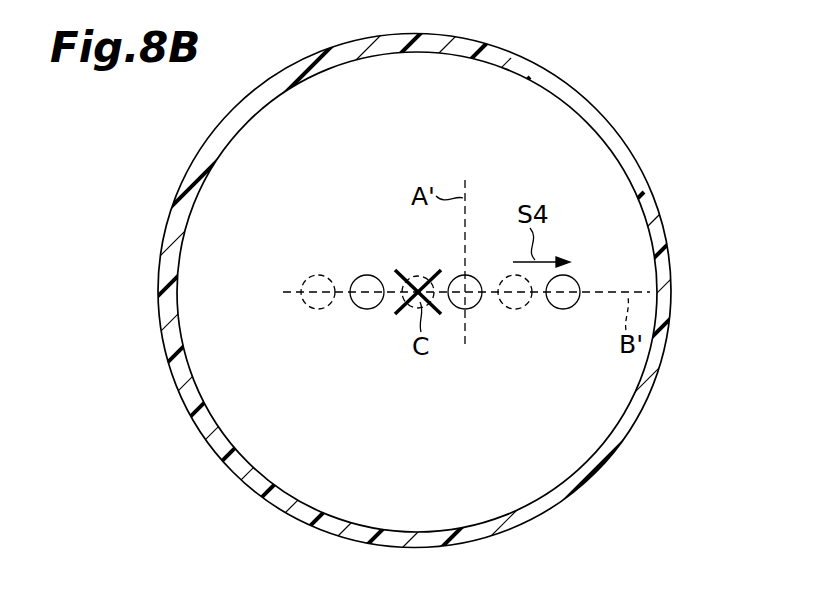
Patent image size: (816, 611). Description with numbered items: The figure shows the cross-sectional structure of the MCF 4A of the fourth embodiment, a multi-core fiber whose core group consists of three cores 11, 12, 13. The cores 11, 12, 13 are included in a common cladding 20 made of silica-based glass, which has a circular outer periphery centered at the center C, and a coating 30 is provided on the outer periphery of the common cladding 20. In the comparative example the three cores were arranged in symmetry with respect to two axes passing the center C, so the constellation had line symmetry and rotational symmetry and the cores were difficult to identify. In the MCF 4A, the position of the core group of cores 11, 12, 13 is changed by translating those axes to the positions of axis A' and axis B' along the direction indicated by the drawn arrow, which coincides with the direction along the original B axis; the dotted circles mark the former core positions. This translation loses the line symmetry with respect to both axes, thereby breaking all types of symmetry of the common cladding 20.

The MCF 4A is at (643, 111).
The core 11 is at (367, 274).
The core 12 is at (468, 275).
The core 13 is at (565, 311).
The common cladding 20 is at (636, 250).
The coating 30 is at (630, 420).